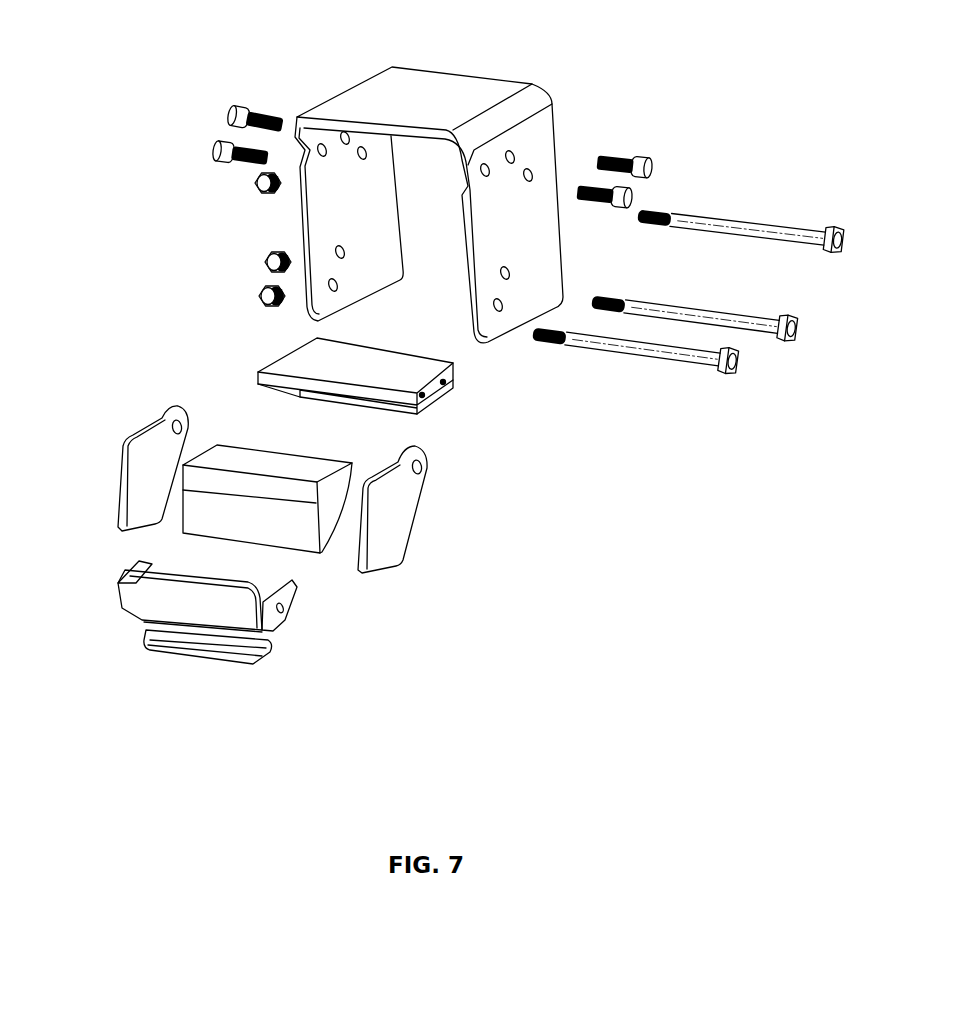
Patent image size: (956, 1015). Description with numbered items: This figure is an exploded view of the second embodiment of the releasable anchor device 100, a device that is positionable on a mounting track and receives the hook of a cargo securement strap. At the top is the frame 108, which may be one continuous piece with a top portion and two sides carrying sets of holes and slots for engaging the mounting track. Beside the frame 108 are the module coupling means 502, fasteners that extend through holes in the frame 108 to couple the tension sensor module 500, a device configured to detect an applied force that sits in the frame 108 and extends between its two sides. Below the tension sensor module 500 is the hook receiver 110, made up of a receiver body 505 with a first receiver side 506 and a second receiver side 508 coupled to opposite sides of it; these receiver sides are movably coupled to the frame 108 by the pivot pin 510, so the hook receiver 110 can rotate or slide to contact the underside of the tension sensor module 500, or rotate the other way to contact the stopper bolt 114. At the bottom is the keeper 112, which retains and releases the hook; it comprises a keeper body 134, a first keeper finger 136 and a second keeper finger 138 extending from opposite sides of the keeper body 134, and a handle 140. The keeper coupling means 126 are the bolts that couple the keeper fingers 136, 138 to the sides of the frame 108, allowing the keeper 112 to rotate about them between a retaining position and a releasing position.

The releasable anchor device 100 is at (143, 73).
The frame 108 is at (478, 90).
The module coupling means 502 is at (222, 147).
The pivot pin 510 is at (723, 227).
The stopper bolt 114 is at (707, 323).
The keeper coupling means 126 is at (660, 350).
The tension sensor module 500 is at (264, 364).
The hook receiver 110 is at (433, 533).
The first receiver side 506 is at (143, 430).
The receiver body 505 is at (237, 458).
The second receiver side 508 is at (377, 477).
The keeper 112 is at (302, 643).
The keeper body 134 is at (157, 610).
The first keeper finger 136 is at (138, 563).
The second keeper finger 138 is at (302, 598).
The handle 140 is at (195, 655).